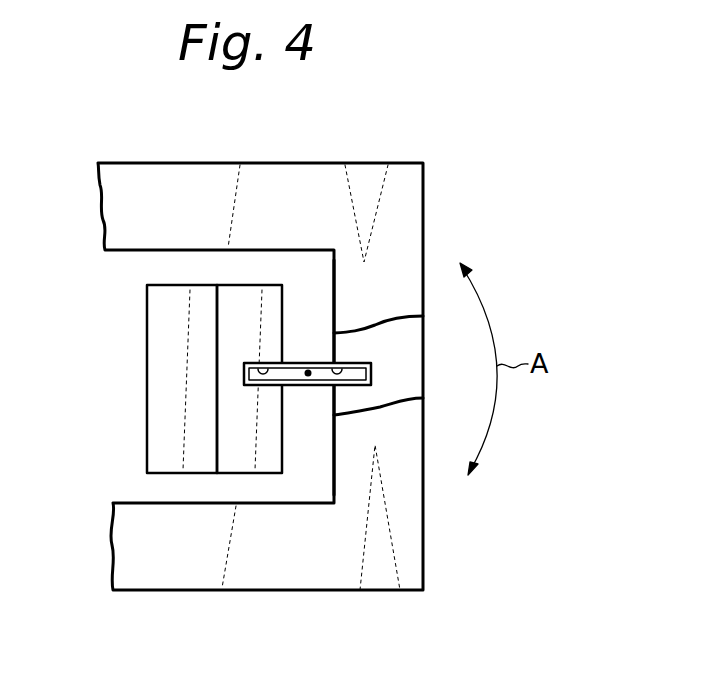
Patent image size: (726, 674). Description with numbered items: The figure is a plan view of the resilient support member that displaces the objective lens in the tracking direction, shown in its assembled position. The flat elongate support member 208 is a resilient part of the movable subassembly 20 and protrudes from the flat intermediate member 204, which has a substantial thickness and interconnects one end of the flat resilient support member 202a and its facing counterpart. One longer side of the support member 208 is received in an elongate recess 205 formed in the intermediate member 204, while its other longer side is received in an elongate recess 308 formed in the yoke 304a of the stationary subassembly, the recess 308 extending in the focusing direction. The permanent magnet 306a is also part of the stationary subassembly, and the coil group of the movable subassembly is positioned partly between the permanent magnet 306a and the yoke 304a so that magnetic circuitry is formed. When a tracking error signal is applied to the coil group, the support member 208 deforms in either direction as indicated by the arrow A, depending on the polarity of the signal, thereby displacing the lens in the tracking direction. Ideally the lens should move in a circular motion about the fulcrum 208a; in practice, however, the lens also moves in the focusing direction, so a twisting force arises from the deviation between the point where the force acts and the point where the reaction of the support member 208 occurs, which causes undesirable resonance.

The movable subassembly 20 is at (440, 553).
The resilient support member 202a is at (365, 591).
The intermediate member 204 is at (423, 334).
The elongate recess 205 is at (334, 364).
The flat elongate support member 208 is at (298, 364).
The fulcrum 208a is at (308, 376).
The yoke 304a is at (258, 460).
The permanent magnet 306a is at (183, 460).
The elongate recess 308 is at (258, 364).